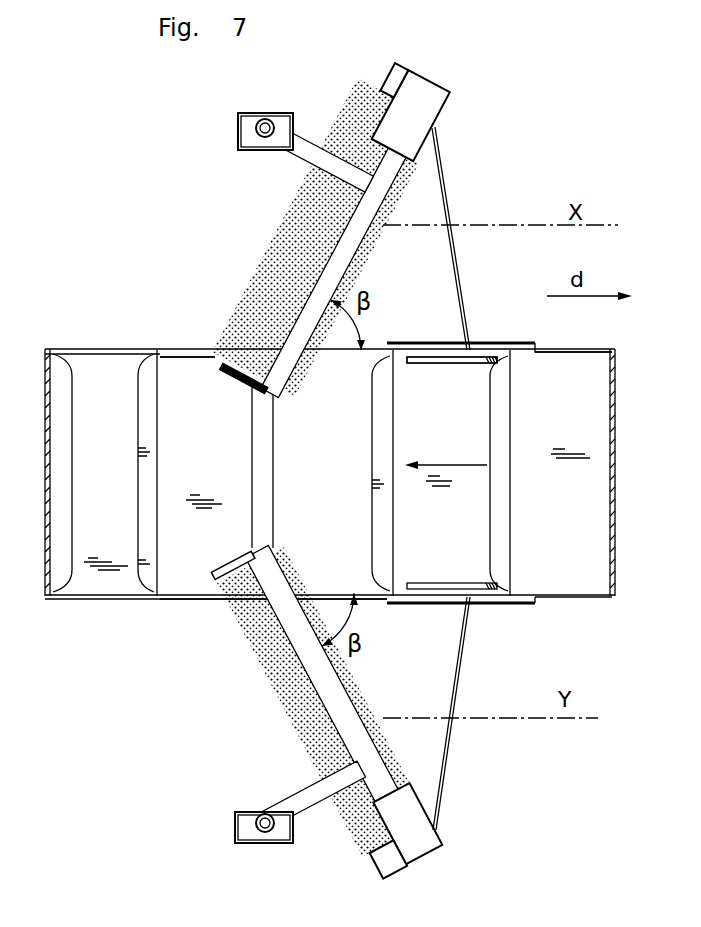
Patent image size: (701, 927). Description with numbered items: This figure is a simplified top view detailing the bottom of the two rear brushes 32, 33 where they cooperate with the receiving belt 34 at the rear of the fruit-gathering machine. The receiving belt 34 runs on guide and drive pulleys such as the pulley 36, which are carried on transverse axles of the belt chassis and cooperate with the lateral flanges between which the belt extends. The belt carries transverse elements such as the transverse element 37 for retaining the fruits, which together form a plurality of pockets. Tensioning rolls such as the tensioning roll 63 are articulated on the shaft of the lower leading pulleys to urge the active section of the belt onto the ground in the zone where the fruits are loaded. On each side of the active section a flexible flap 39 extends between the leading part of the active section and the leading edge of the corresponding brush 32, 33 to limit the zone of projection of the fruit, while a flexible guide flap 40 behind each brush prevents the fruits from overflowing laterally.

The rear brush 32 is at (274, 692).
The rear brush 33 is at (270, 260).
The receiving belt 34 is at (143, 610).
The guide and drive pulley 36 is at (568, 600).
The transverse element 37 is at (505, 518).
The flexible flap 39 is at (453, 687).
The flexible guide flap 40 is at (190, 597).
The tensioning roll 63 is at (406, 362).